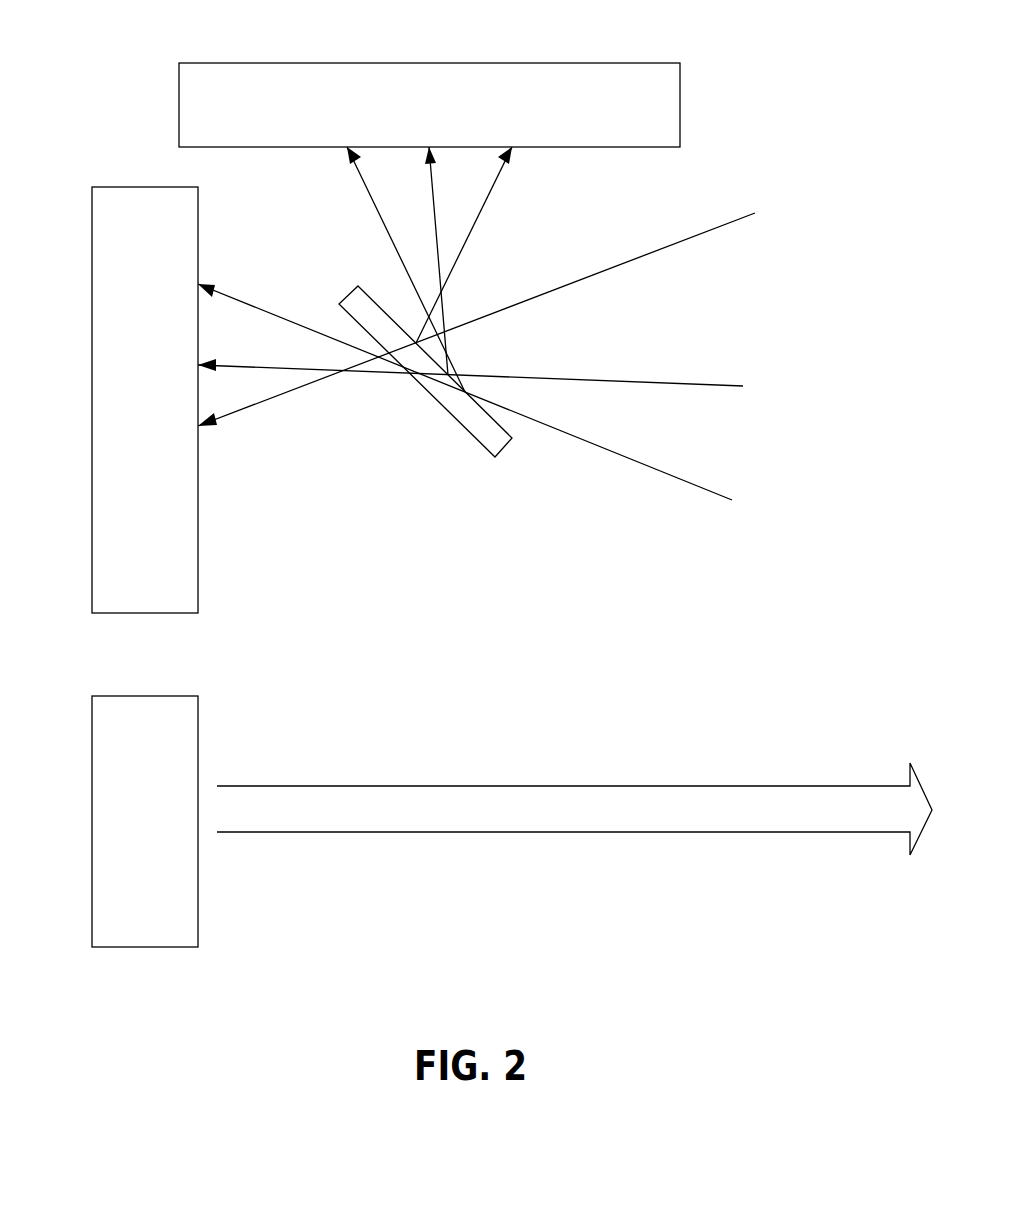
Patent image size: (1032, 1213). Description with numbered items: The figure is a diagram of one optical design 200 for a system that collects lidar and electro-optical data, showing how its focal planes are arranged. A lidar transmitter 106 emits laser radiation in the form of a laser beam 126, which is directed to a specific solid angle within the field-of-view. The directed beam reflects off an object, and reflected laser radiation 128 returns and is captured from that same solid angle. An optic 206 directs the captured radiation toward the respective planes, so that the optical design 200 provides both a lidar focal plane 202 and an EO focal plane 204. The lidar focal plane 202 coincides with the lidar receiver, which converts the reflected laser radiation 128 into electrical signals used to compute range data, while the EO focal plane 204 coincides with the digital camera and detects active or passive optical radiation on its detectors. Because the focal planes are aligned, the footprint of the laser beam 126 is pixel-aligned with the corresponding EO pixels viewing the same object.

The optical design 200 is at (67, 34).
The lidar focal plane 202 is at (167, 480).
The EO focal plane 204 is at (565, 115).
The optic 206 is at (447, 412).
The lidar transmitter 106 is at (167, 867).
The laser beam 126 is at (405, 832).
The reflected laser radiation 128 is at (308, 386).